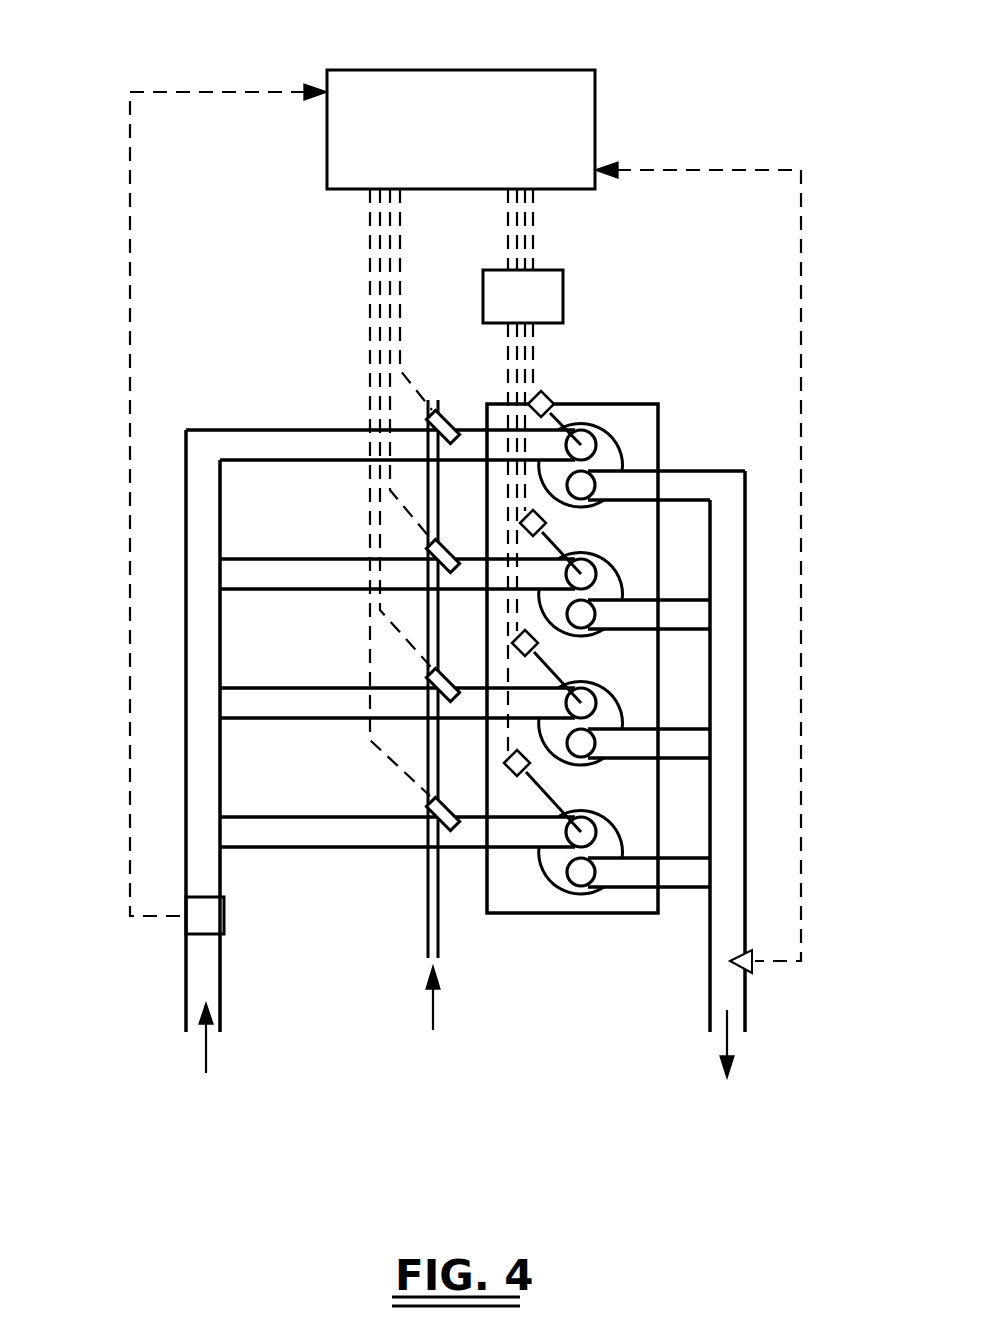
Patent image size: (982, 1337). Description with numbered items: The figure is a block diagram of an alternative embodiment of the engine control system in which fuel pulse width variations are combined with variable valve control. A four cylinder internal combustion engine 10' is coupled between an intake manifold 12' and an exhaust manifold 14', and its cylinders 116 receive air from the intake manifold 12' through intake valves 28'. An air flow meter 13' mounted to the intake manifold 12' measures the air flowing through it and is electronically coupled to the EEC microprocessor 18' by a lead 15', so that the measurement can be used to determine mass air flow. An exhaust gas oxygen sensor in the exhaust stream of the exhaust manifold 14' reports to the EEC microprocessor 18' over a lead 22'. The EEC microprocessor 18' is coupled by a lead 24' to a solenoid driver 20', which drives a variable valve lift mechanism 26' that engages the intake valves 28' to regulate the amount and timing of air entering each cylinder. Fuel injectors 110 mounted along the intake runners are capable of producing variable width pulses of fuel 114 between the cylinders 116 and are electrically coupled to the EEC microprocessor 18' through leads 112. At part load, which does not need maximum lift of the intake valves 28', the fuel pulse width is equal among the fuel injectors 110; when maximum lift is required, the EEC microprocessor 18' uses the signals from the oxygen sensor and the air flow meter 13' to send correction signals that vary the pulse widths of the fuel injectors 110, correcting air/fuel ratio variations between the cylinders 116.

The EEC microprocessor 18' is at (461, 97).
The lead 15' is at (177, 500).
The leads 112 is at (400, 228).
The lead 24' is at (581, 470).
The solenoid driver 20' is at (573, 296).
The engine 10' is at (572, 702).
The cylinders 116 is at (618, 571).
The intake manifold 12' is at (309, 769).
The air flow meter 13' is at (242, 922).
The fuel 114 is at (428, 890).
The fuel injectors 110 is at (437, 830).
The variable valve lift mechanism 26' is at (573, 572).
The intake valves 28' is at (597, 643).
The exhaust manifold 14' is at (733, 789).
The lead 22' is at (747, 567).